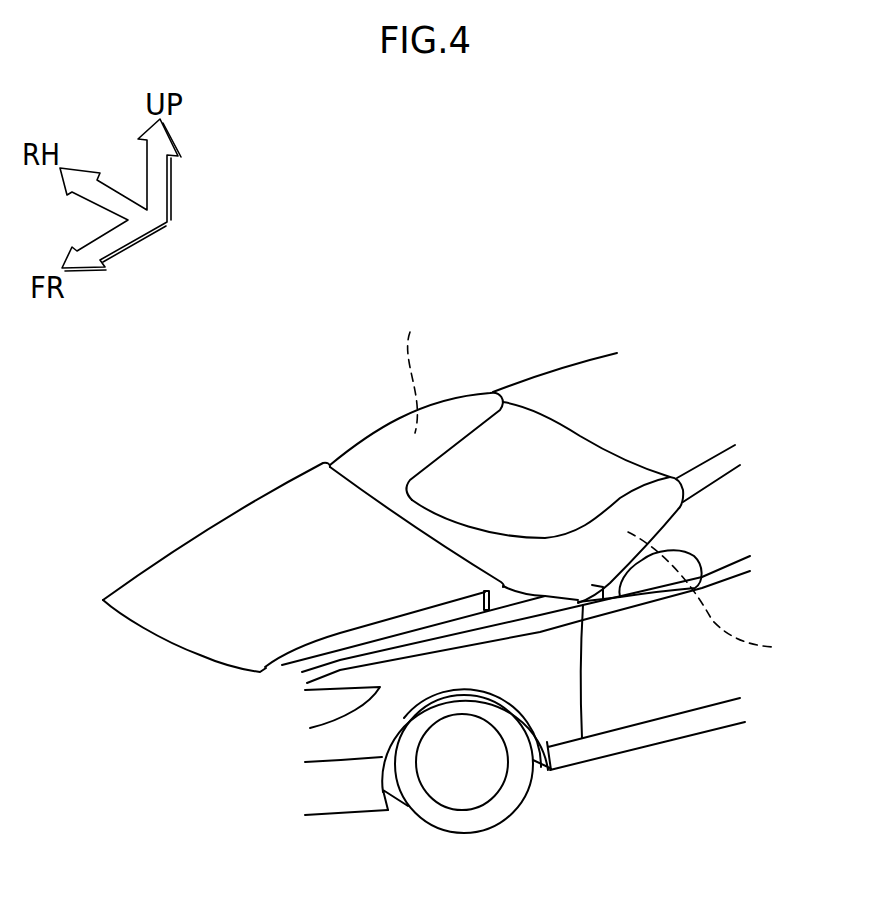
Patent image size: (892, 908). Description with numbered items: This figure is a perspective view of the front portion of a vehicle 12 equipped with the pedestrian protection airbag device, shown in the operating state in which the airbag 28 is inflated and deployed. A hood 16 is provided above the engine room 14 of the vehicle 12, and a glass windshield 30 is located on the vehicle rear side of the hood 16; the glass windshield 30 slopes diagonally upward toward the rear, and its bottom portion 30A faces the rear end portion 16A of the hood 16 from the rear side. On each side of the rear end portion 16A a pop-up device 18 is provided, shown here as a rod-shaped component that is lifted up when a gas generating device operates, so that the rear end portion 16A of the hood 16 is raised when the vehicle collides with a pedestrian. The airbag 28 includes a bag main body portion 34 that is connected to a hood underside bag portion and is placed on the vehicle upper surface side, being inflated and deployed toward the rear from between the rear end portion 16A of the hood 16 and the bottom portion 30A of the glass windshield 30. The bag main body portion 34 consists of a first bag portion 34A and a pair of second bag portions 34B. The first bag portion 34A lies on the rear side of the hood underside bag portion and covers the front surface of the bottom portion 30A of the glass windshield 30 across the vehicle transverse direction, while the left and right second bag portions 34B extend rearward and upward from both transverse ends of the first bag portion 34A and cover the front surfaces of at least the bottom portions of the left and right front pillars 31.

The vehicle 12 is at (643, 748).
The engine room 14 is at (350, 640).
The hood 16 is at (267, 497).
The rear end portion of the hood 16A is at (352, 503).
The pop-up device 18 is at (497, 597).
The airbag 28 is at (578, 437).
The glass windshield 30 is at (563, 452).
The bottom portion of the glass windshield 30A is at (460, 527).
The front pillar 31 is at (607, 476).
The bag main body portion 34 is at (578, 437).
The first bag portion 34A is at (400, 523).
The second bag portion 34B is at (483, 390).